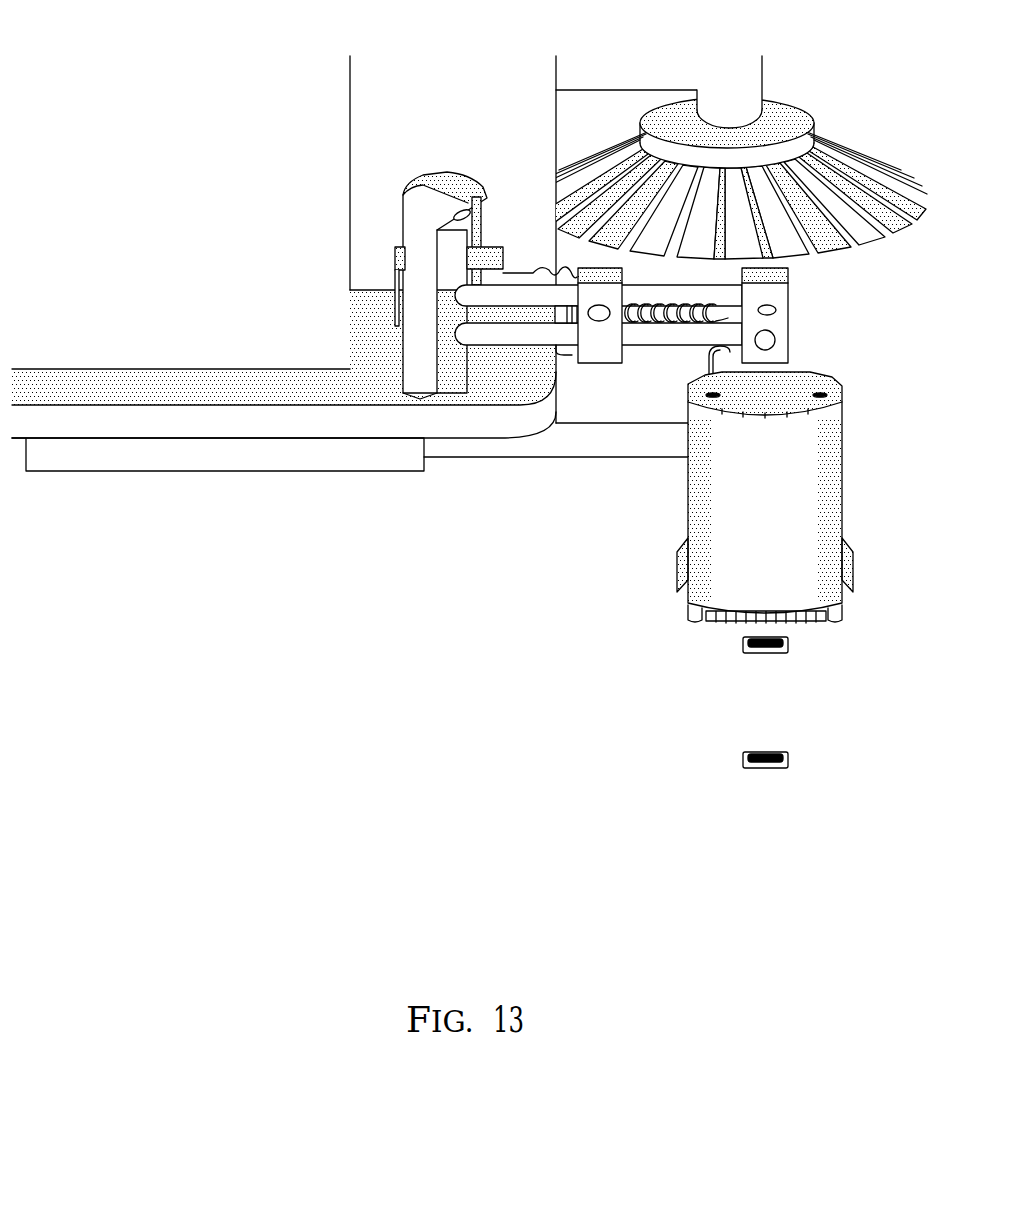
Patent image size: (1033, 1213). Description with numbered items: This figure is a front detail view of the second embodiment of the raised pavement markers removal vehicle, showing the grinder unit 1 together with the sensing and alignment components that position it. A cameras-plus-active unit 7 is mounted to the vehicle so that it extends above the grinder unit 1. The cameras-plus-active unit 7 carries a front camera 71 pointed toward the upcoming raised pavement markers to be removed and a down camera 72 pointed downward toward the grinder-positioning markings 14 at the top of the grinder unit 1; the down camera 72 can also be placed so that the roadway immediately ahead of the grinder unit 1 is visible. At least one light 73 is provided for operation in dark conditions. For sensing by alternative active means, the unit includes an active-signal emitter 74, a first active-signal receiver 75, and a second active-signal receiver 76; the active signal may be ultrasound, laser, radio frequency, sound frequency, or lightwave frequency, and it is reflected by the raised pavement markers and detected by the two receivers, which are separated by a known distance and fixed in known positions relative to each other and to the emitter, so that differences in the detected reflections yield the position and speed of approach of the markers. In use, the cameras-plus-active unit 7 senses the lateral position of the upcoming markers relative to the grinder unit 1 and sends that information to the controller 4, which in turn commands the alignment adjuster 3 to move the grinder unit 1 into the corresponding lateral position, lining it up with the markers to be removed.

The grinder unit 1 is at (642, 510).
The alignment adjuster 3 is at (330, 462).
The controller 4 is at (503, 256).
The cameras-plus-active unit 7 is at (471, 341).
The grinder-positioning markings 14 is at (851, 396).
The front camera 71 is at (776, 340).
The down camera 72 is at (800, 321).
The light 73 is at (607, 331).
The active-signal emitter 74 is at (599, 320).
The first active-signal receiver 75 is at (477, 214).
The second active-signal receiver 76 is at (777, 310).